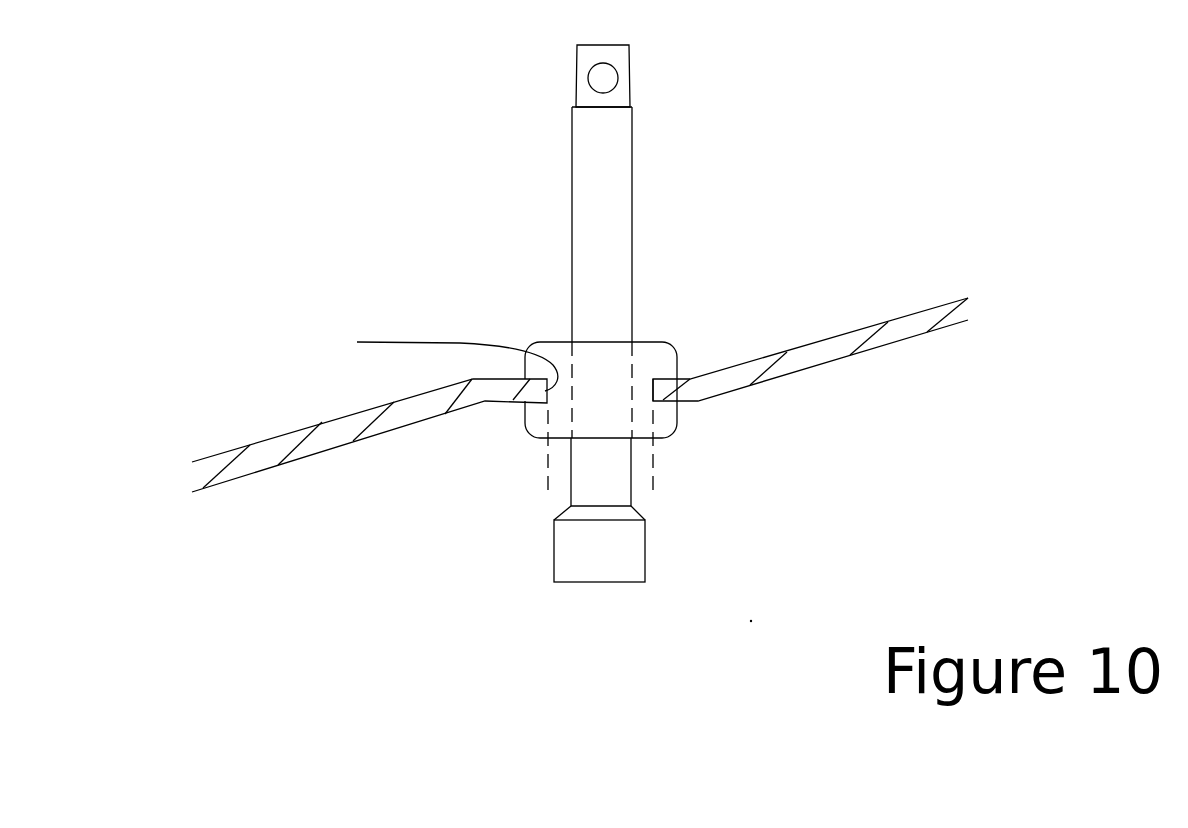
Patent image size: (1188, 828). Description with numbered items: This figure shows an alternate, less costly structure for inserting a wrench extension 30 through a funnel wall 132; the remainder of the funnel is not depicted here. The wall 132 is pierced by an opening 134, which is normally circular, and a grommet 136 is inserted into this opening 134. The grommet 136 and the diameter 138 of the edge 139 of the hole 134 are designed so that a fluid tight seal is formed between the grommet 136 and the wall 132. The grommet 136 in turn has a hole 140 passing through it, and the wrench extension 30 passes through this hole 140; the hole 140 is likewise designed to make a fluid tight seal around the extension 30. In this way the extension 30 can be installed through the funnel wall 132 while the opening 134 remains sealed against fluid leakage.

The wrench extension 30 is at (618, 145).
The funnel wall 132 is at (820, 365).
The opening 134 is at (642, 382).
The grommet 136 is at (557, 348).
The diameter 138 is at (697, 480).
The edge 139 is at (406, 347).
The hole 140 is at (607, 367).